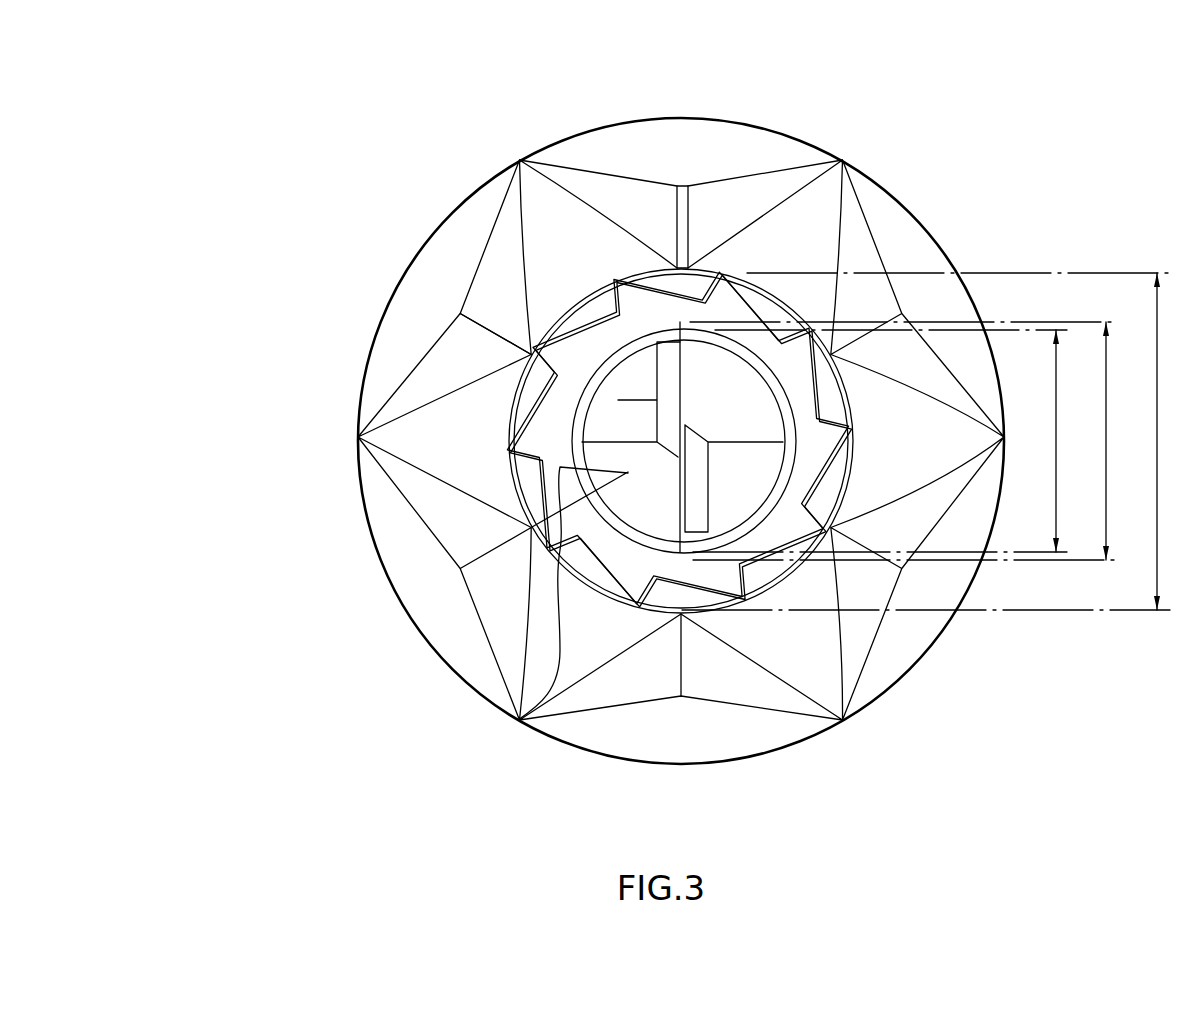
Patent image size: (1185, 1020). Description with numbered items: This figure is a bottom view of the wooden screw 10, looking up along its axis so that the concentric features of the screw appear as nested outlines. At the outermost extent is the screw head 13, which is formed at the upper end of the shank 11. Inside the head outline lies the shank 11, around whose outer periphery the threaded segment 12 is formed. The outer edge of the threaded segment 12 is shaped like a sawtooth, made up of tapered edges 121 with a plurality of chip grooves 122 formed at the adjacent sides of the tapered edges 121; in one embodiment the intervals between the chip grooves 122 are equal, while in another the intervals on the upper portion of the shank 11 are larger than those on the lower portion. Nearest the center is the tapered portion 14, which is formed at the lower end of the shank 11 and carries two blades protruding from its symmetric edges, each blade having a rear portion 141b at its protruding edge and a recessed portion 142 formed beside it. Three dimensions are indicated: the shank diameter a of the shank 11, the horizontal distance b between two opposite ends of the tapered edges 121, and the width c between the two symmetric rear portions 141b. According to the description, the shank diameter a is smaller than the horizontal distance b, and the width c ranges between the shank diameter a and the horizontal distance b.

The wooden screw 10 is at (599, 409).
The shank 11 is at (519, 721).
The threaded segment 12 is at (560, 406).
The tapered edges 121 is at (676, 268).
The chip grooves 122 is at (733, 297).
The screw head 13 is at (808, 142).
The tapered portion 14 is at (525, 455).
The rear portion 141b is at (535, 338).
The recessed portion 142 is at (543, 345).
The shank diameter a is at (885, 441).
The horizontal distance b is at (930, 441).
The width c is at (908, 441).